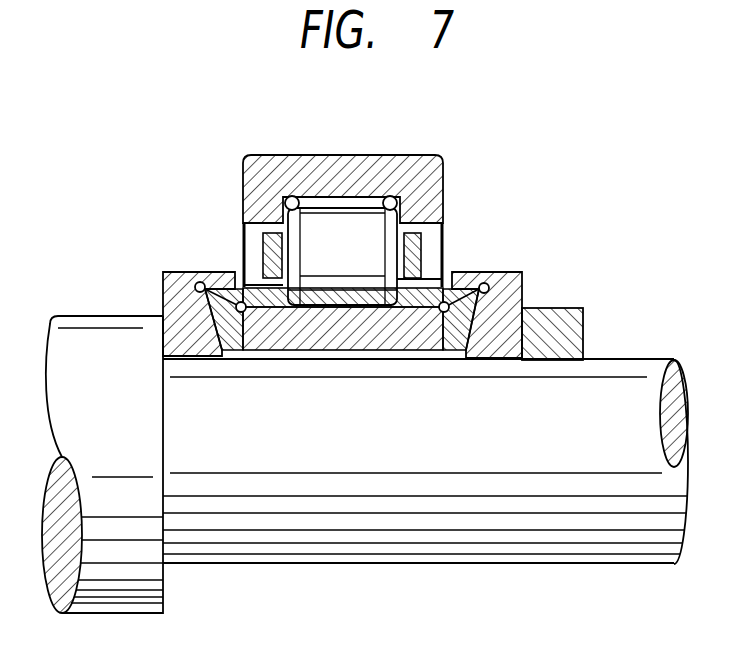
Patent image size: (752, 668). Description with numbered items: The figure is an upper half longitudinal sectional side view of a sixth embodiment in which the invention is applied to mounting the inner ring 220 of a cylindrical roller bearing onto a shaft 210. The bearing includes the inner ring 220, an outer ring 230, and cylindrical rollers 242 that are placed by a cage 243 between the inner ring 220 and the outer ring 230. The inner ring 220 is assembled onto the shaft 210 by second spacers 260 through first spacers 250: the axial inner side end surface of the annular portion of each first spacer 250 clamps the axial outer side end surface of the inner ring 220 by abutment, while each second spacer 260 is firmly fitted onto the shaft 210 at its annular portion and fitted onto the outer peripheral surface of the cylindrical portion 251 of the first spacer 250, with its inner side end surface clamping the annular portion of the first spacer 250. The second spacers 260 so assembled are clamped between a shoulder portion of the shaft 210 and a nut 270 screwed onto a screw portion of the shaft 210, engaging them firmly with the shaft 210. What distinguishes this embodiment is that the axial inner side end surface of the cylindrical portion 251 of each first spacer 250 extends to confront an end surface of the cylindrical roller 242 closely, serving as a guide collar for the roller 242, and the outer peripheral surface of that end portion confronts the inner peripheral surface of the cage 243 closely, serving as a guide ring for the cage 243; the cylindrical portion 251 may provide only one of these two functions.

The shaft 210 is at (551, 496).
The inner ring 220 is at (281, 337).
The outer ring 230 is at (320, 167).
The cylindrical roller 242 is at (352, 230).
The cage 243 is at (273, 238).
The first spacer 250 is at (217, 287).
The cylindrical portion 251 is at (430, 285).
The second spacer 260 is at (172, 272).
The nut 270 is at (563, 322).